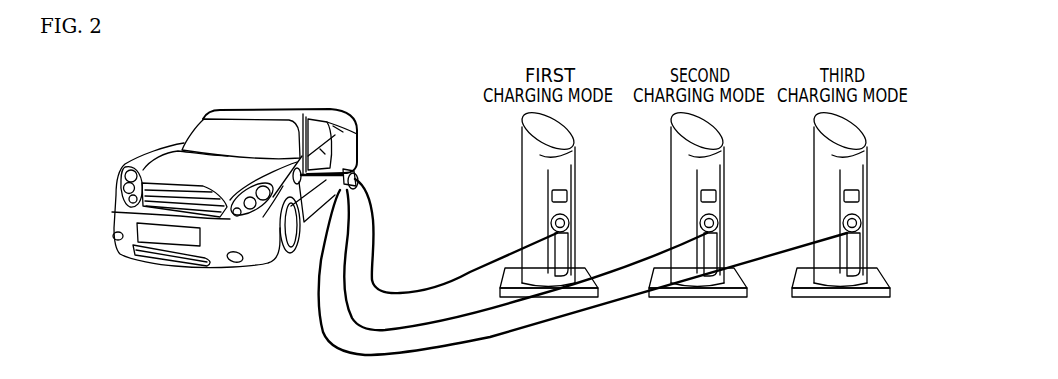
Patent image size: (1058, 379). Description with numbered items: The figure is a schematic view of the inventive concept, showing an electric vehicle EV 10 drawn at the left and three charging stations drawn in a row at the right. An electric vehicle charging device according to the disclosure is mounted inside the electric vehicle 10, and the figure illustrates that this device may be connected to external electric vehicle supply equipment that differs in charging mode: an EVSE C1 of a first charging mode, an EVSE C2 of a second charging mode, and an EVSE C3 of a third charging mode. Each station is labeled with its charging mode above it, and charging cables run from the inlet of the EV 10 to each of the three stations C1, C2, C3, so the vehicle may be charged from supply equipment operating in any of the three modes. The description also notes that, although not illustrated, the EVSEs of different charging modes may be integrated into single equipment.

The electric vehicle 10 is at (222, 118).
The electric vehicle EV is at (235, 172).
The EVSE of a first charging mode C1 is at (549, 230).
The EVSE of a second charging mode C2 is at (698, 230).
The EVSE of a third charging mode C3 is at (841, 230).